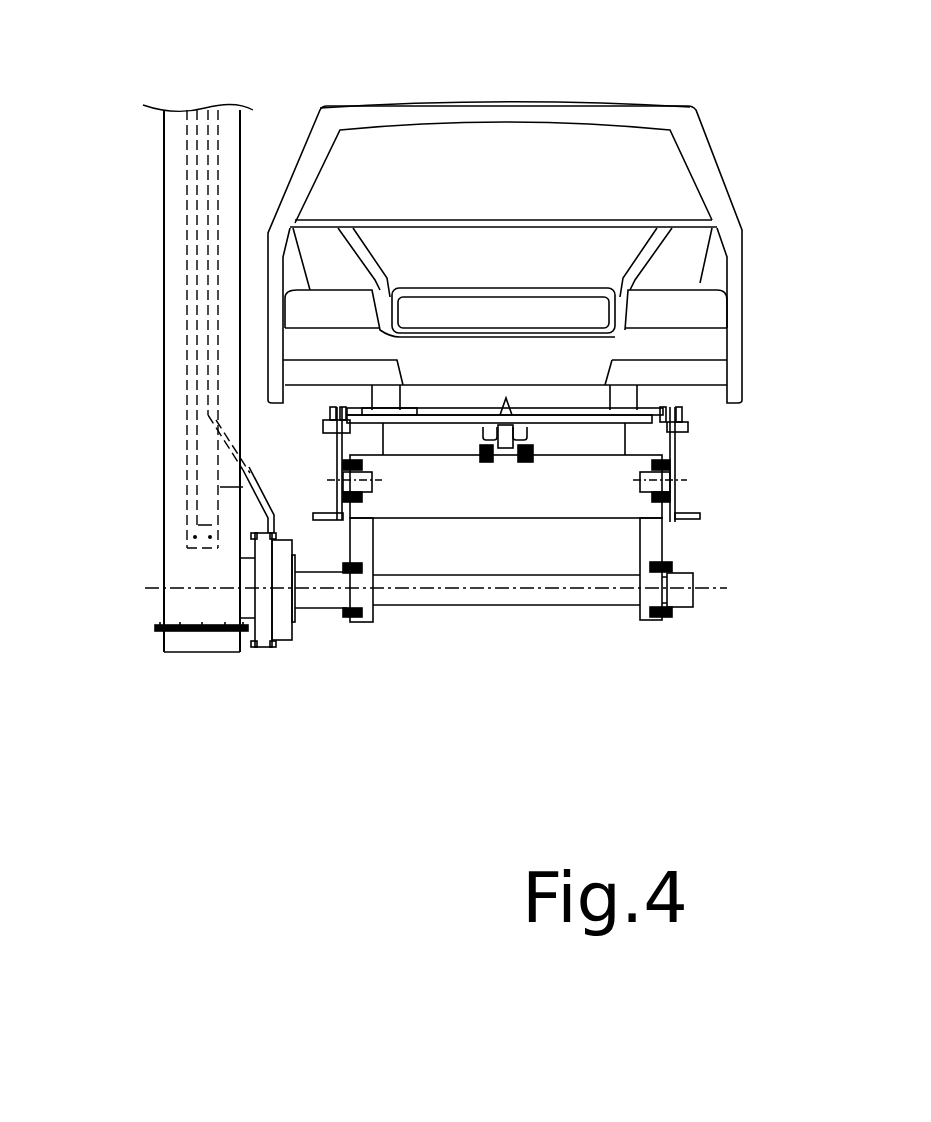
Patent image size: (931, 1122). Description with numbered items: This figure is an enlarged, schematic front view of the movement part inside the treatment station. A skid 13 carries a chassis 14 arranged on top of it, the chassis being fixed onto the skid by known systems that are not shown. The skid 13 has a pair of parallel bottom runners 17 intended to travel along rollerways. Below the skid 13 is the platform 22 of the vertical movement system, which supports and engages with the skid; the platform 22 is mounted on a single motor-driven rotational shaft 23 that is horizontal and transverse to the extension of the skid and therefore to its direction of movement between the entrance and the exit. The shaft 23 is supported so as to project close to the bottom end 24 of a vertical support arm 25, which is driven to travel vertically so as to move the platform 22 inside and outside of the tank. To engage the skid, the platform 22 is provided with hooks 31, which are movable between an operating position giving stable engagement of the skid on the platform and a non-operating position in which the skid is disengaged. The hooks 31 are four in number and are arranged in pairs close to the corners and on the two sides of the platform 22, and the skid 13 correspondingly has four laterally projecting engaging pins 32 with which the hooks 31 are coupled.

The chassis 14 is at (473, 103).
The skid 13 is at (560, 417).
The vertical support arm 25 is at (165, 155).
The bottom end 24 is at (195, 640).
The laterally projecting pins 32 is at (323, 430).
The hooks 31 is at (333, 466).
The bottom runners 17 is at (387, 432).
The platform 22 is at (460, 517).
The rotational shaft 23 is at (607, 590).